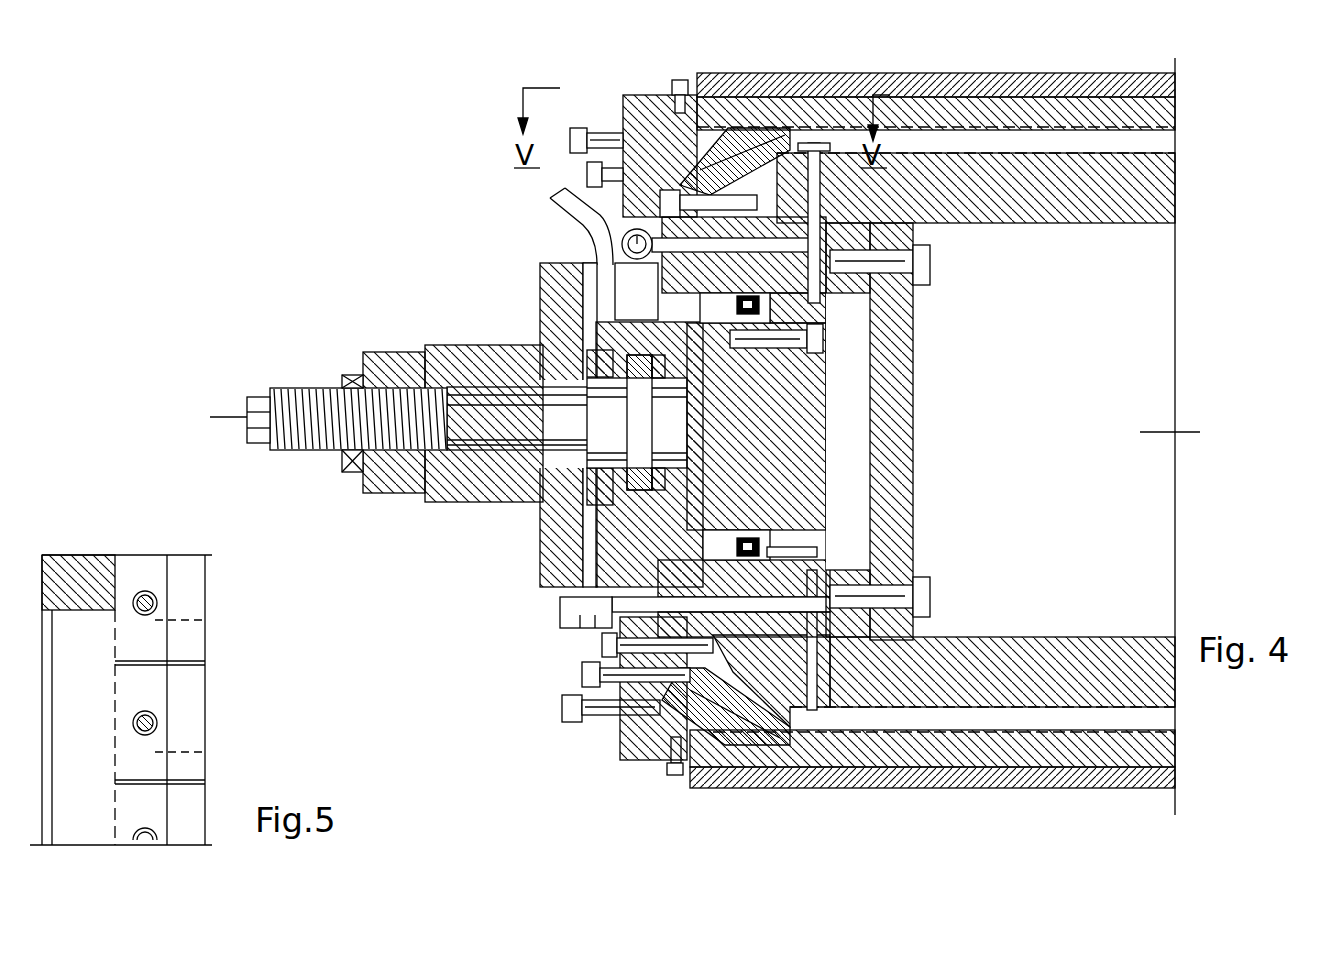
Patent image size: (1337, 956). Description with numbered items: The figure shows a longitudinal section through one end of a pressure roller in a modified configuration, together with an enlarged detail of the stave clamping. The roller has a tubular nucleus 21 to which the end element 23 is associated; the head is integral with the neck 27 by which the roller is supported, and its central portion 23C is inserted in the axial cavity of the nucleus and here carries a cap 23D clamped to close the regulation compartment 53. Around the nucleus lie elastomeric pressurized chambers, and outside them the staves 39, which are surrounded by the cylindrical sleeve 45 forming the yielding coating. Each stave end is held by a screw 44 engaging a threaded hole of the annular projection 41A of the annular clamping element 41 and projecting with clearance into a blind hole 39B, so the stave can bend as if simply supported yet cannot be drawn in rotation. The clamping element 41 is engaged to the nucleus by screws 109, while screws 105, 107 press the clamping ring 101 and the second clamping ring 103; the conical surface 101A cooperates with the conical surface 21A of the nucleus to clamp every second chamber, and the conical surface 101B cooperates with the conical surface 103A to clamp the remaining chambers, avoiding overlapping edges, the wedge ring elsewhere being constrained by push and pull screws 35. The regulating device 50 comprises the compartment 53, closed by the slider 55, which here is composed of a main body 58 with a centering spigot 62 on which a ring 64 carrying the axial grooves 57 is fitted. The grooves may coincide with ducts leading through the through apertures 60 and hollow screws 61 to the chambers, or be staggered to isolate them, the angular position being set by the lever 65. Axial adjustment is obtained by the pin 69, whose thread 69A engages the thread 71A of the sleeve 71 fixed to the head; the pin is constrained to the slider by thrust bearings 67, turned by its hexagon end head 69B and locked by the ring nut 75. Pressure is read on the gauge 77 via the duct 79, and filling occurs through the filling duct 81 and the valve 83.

In FIG. 4, the nucleus 21 is at (1112, 215).
In FIG. 4, the conical surface 21A is at (736, 666).
In FIG. 4, the end element 23 is at (945, 357).
In FIG. 4, the central portion 23C is at (862, 225).
In FIG. 4, the cap 23D is at (932, 268).
In FIG. 4, the neck 27 is at (467, 343).
In FIG. 4, the push and pull screws 35 is at (975, 790).
In FIG. 4, the staves 39 is at (1168, 112).
In FIG. 5, the staves 39 is at (190, 572).
In FIG. 5, the blind hole 39B is at (140, 595).
In FIG. 4, the annular clamping element 41 is at (625, 745).
In FIG. 5, the annular clamping element 41 is at (72, 610).
In FIG. 4, the annular projection 41A is at (712, 97).
In FIG. 4, the screw 44 is at (678, 80).
In FIG. 5, the screw 44 is at (160, 608).
In FIG. 4, the cylindrical sleeve 45 is at (1162, 82).
In FIG. 4, the regulating device 50 is at (512, 532).
In FIG. 4, the regulation compartment 53 is at (862, 446).
In FIG. 4, the slider 55 is at (878, 395).
In FIG. 4, the axial grooves 57 is at (872, 300).
In FIG. 4, the main body 58 is at (832, 403).
In FIG. 4, the through apertures 60 is at (822, 170).
In FIG. 4, the hollow screws 61 is at (820, 145).
In FIG. 4, the centering spigot 62 is at (872, 462).
In FIG. 4, the ring 64 is at (845, 505).
In FIG. 4, the lever 65 is at (560, 220).
In FIG. 4, the thrust bearings 67 is at (640, 460).
In FIG. 4, the pin 69 is at (314, 455).
In FIG. 4, the thread 69A is at (302, 385).
In FIG. 4, the hexagon end head 69B is at (258, 395).
In FIG. 4, the sleeve 71 is at (488, 350).
In FIG. 4, the thread 71A is at (443, 445).
In FIG. 4, the ring nut 75 is at (356, 472).
In FIG. 4, the gauge 77 is at (625, 238).
In FIG. 4, the duct 79 is at (657, 293).
In FIG. 4, the filling duct 81 is at (716, 532).
In FIG. 4, the valve 83 is at (585, 628).
In FIG. 4, the clamping ring 101 is at (625, 198).
In FIG. 4, the conical surface 101A is at (760, 130).
In FIG. 4, the conical surface 101B is at (726, 181).
In FIG. 4, the second clamping ring 103 is at (630, 135).
In FIG. 4, the conical surface 103A is at (718, 778).
In FIG. 4, the screws 105 is at (578, 672).
In FIG. 4, the screws 107 is at (560, 706).
In FIG. 4, the screws 109 is at (600, 645).